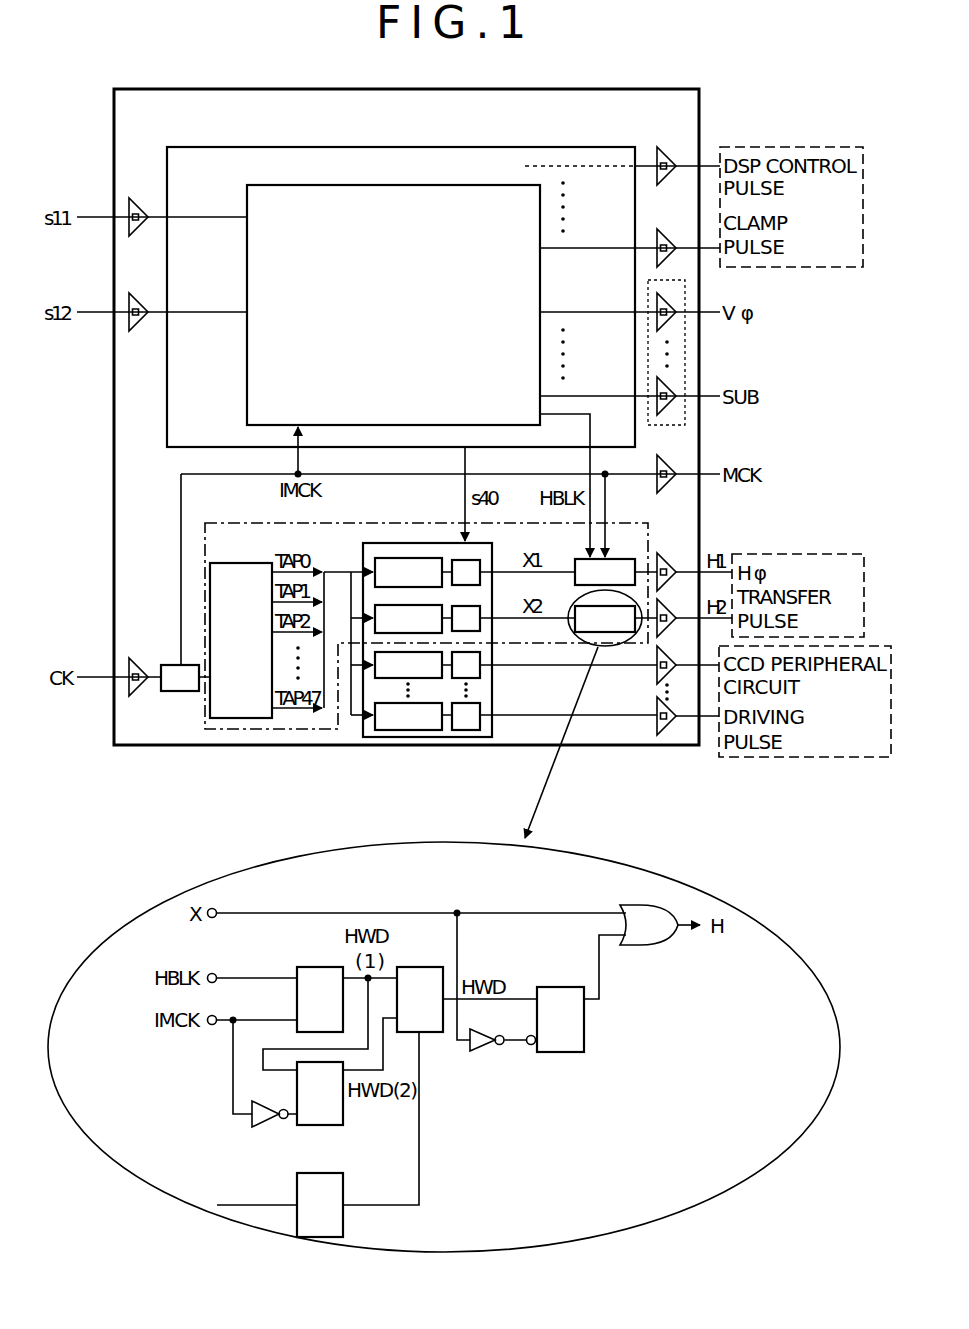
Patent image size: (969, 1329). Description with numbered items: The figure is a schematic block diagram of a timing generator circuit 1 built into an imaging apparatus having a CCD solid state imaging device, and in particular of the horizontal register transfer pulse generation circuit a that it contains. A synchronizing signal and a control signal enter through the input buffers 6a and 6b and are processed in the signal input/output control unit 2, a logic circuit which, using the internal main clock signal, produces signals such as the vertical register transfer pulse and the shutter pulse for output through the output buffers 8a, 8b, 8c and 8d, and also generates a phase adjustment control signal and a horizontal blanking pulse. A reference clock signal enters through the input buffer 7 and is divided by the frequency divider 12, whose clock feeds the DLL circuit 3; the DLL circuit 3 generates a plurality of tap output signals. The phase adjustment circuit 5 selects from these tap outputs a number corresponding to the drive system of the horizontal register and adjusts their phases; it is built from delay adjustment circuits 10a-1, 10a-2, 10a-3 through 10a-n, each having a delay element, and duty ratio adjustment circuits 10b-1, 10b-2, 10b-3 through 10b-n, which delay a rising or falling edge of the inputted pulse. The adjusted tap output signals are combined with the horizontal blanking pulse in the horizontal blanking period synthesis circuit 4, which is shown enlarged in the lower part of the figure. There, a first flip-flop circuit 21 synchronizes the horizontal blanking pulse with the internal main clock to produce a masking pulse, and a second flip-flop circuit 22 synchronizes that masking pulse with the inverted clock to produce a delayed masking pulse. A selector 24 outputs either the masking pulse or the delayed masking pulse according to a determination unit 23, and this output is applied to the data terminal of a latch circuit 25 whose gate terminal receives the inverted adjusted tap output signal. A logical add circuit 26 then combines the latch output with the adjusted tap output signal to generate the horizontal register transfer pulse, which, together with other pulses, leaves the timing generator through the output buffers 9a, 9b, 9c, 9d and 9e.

The timing generator circuit 1 is at (114, 105).
The signal input/output control unit 2 is at (247, 196).
The DLL circuit 3 is at (240, 719).
The horizontal blanking period synthesis circuit 4 is at (622, 560).
The phase adjustment circuit 5 is at (363, 563).
The input buffer 6a is at (140, 199).
The input buffer 6b is at (140, 294).
The input buffer 7 is at (139, 658).
The output buffer 8a is at (666, 148).
The output buffer 8b is at (666, 228).
The output buffer 8c is at (665, 300).
The output buffer 8d is at (665, 385).
The output buffer 9a is at (665, 464).
The output buffer 9b is at (665, 564).
The output buffer 9c is at (665, 611).
The output buffer 9d is at (655, 677).
The output buffer 9e is at (667, 730).
The delay adjustment circuit 10a-1 is at (393, 565).
The delay adjustment circuit 10a-2 is at (415, 615).
The delay adjustment circuit 10a-3 is at (427, 668).
The delay adjustment circuit 10a-n is at (387, 722).
The duty ratio adjustment circuit 10b-1 is at (472, 568).
The duty ratio adjustment circuit 10b-2 is at (472, 614).
The duty ratio adjustment circuit 10b-3 is at (472, 672).
The duty ratio adjustment circuit 10b-n is at (467, 722).
The frequency divider 12 is at (178, 692).
The first flip-flop circuit 21 is at (318, 967).
The second flip-flop circuit 22 is at (343, 1115).
The determination unit 23 is at (343, 1183).
The selector 24 is at (418, 967).
The latch circuit 25 is at (562, 1053).
The logical add circuit 26 is at (648, 946).
The horizontal register transfer pulse generation circuit a is at (296, 730).